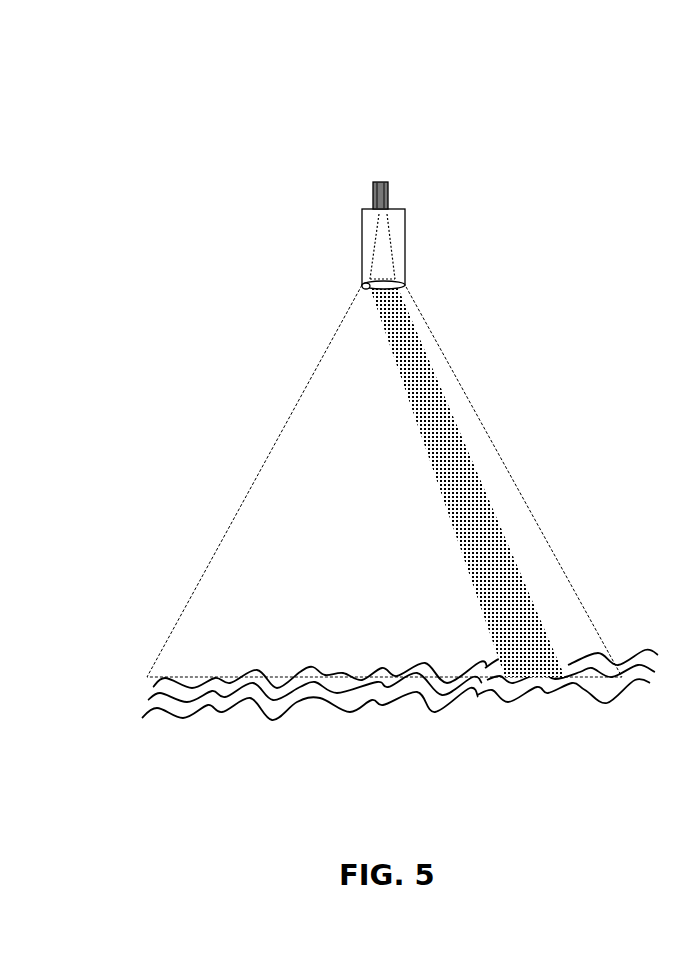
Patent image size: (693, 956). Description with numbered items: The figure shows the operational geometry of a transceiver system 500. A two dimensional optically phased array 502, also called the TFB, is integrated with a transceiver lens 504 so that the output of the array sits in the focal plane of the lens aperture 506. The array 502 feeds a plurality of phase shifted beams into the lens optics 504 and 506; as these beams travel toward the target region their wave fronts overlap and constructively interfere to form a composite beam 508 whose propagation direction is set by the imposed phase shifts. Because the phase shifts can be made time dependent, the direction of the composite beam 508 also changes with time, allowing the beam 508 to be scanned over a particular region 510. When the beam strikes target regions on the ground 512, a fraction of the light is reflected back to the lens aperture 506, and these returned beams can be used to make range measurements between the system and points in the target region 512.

The transceiver system 500 is at (608, 137).
The two dimensional optically phased array 502 is at (373, 182).
The transceiver lens 504 is at (404, 242).
The lens aperture 506 is at (364, 283).
The composite beam 508 is at (492, 505).
The scanned region 510 is at (240, 508).
The ground target region 512 is at (478, 700).